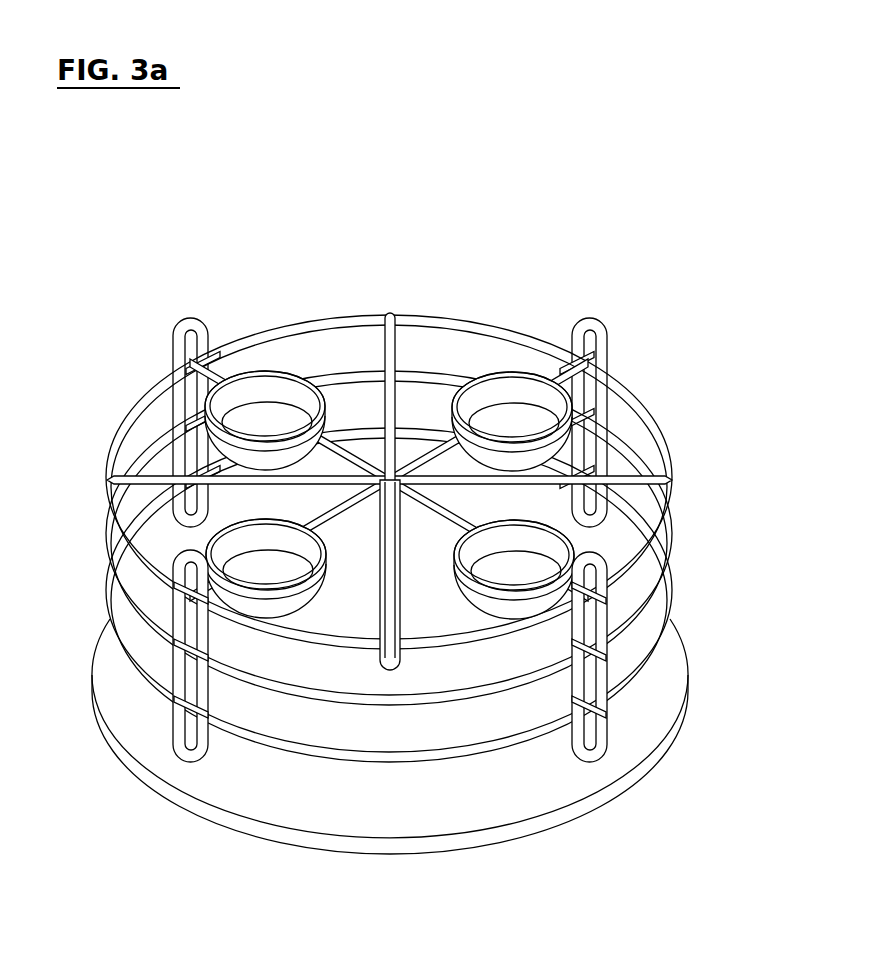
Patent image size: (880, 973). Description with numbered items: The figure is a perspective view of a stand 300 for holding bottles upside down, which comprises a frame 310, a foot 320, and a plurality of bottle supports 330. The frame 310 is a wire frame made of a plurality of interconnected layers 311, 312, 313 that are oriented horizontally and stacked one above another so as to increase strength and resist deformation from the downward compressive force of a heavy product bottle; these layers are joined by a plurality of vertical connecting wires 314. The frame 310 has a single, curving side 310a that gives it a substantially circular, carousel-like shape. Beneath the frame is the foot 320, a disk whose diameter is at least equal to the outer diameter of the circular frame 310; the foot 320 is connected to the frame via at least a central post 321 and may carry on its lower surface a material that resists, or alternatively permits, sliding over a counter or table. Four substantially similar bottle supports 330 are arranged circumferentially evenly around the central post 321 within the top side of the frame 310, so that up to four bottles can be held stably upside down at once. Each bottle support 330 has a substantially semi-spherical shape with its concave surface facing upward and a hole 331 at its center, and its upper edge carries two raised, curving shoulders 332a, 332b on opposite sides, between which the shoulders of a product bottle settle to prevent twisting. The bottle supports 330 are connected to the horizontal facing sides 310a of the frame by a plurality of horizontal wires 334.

The stand 300 is at (190, 182).
The frame 310 is at (414, 300).
The curving side 310a is at (84, 528).
The interconnected layer 311 is at (668, 462).
The interconnected layer 312 is at (668, 545).
The interconnected layer 313 is at (666, 600).
The vertical connecting wire 314 is at (572, 688).
The foot 320 is at (272, 806).
The central post 321 is at (378, 662).
The bottle support 330 is at (491, 388).
The hole 331 is at (521, 432).
The raised curving shoulder 332a is at (311, 388).
The raised curving shoulder 332b is at (235, 375).
The horizontal wire 334 is at (427, 500).